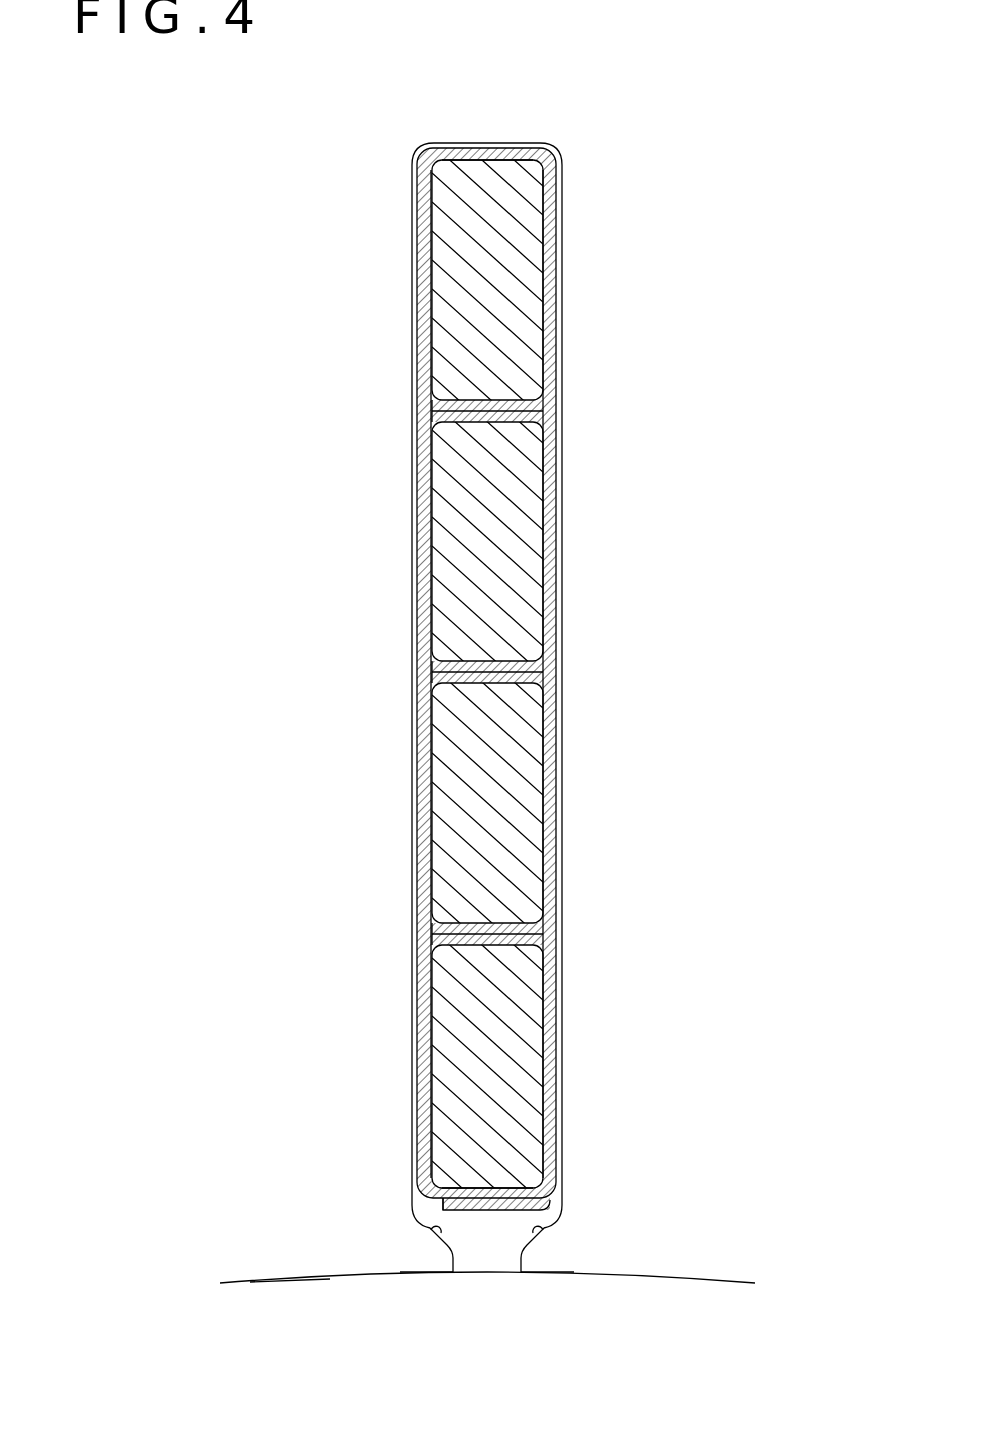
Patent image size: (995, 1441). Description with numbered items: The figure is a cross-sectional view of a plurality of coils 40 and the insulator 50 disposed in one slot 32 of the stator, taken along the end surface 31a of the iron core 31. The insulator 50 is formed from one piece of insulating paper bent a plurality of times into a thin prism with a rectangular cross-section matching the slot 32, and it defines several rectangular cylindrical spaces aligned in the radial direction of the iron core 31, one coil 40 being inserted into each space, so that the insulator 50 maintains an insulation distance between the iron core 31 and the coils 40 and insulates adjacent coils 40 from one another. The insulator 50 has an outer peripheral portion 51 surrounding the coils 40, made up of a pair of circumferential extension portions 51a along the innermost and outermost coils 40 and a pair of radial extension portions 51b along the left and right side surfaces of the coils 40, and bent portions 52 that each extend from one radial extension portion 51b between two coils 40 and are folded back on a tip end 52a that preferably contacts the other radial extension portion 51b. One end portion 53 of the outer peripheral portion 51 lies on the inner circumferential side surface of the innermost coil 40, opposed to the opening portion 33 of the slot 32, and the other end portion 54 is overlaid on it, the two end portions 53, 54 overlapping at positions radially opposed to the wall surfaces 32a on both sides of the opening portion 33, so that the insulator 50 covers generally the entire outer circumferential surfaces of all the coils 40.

The iron core 31 is at (658, 1285).
The end surface 31a is at (286, 1248).
The slot 32 is at (558, 144).
The wall surfaces 32a is at (438, 1236).
The opening portion 33 is at (481, 1284).
The coils 40 is at (504, 261).
The insulator 50 is at (487, 673).
The outer peripheral portion 51 is at (411, 278).
The circumferential extension portions 51a is at (476, 141).
The radial extension portions 51b is at (414, 535).
The bent portions 52 is at (489, 395).
The tip end 52a is at (434, 406).
The one end portion 53 is at (538, 1193).
The other end portion 54 is at (437, 1206).